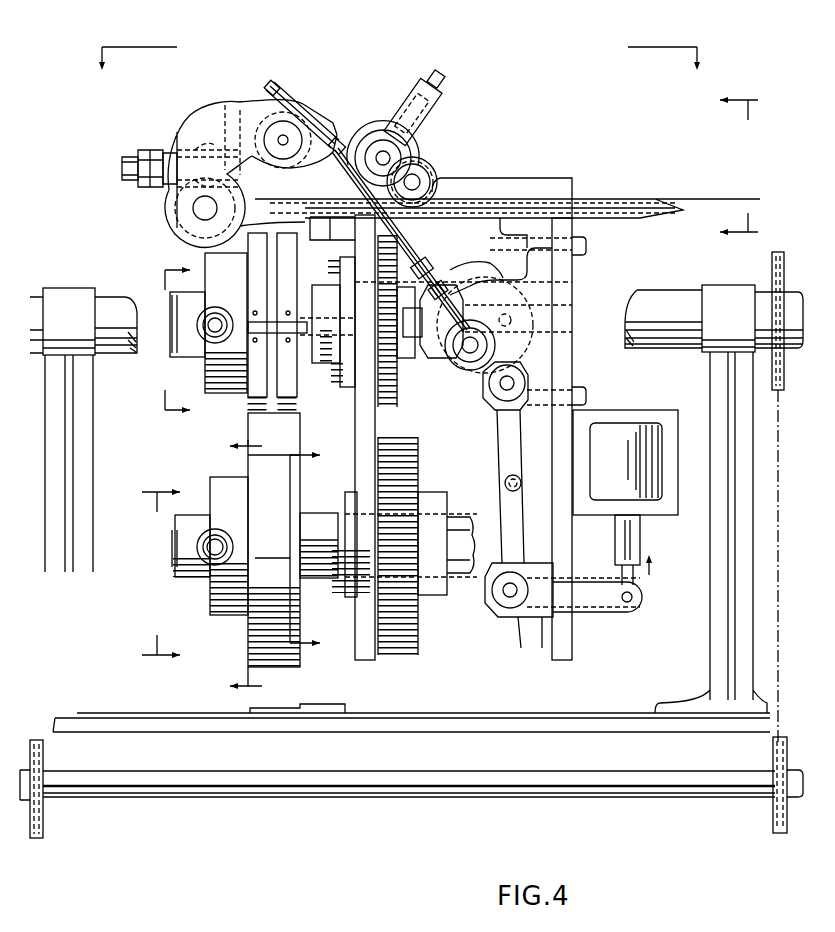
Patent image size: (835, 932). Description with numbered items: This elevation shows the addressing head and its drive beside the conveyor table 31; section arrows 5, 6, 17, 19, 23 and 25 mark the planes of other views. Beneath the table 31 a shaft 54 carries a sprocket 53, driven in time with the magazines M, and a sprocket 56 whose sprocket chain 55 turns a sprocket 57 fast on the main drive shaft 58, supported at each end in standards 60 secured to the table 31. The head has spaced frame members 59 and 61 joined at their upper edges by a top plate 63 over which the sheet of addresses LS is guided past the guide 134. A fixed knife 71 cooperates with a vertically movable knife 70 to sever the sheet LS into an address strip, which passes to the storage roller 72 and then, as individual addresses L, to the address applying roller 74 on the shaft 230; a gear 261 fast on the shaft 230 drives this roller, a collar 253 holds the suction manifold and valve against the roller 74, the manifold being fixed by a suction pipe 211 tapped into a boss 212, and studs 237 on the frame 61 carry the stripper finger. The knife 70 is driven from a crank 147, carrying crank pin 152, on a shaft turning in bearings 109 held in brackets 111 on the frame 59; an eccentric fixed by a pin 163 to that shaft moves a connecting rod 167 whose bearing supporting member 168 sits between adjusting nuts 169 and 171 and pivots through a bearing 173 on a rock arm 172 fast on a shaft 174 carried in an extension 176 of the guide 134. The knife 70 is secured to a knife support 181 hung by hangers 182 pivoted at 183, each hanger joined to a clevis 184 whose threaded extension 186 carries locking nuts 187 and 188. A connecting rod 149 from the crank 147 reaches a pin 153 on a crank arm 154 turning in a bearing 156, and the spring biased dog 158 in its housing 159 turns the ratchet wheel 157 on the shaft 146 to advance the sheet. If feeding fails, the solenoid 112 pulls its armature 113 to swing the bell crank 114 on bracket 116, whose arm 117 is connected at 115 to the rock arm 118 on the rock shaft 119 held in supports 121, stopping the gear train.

The section line 6- 6 is at (399, 45).
The section line 5- 5 is at (746, 166).
The section line 17- 17 is at (163, 340).
The section line 25- 25 is at (147, 573).
The section line 23- 23 is at (255, 566).
The section line 19- 19 is at (312, 549).
The main drive shaft 58 is at (102, 290).
The standards 60 is at (94, 468).
The sprocket 57 is at (778, 255).
The sprocket chain 55 is at (786, 565).
The conveyor table 31 is at (168, 724).
The address L is at (298, 707).
The magazine M is at (322, 712).
The shaft 54 is at (430, 793).
The sprocket 53 is at (45, 813).
The sprocket 56 is at (773, 820).
The frame member 61 is at (367, 658).
The frame member 59 is at (561, 655).
The fixed knife 71 is at (310, 218).
The movable knife 70 is at (300, 192).
The sheet of addresses LS is at (705, 178).
The guide 134 is at (488, 178).
The pin 163 is at (593, 210).
The top plate 63 is at (493, 222).
The brackets 111 is at (522, 284).
The bearings 109 is at (495, 300).
The extension 176 is at (188, 232).
The shaft 174 is at (193, 210).
The locking nut 188 is at (125, 157).
The locking nut 187 is at (148, 150).
The threaded extension 186 is at (172, 150).
The clevis 184 is at (195, 150).
The rock arm 172 is at (222, 150).
The hangers 182 is at (248, 140).
The knife support 181 is at (326, 130).
The pivotal connections 183 is at (270, 90).
The bearing supporting member 168 is at (318, 110).
The adjusting nut 169 is at (275, 125).
The bearing 173 is at (298, 97).
The adjusting nut 171 is at (338, 140).
The bearing 156 is at (368, 135).
The shaft 146 is at (383, 150).
The pin 153 is at (420, 180).
The crank arm 154 is at (422, 148).
The spring biased dog 158 is at (432, 90).
The housing 159 is at (442, 100).
The ratchet wheel 157 is at (397, 135).
The connecting rod 167 is at (448, 200).
The connecting rod 149 is at (428, 295).
The crank pin 152 is at (463, 357).
The crank 147 is at (443, 350).
The rock shaft 119 is at (512, 380).
The supports 121 is at (484, 395).
The arm 117 is at (505, 520).
The rock arm 118 is at (510, 447).
The connection 115 is at (507, 482).
The bracket 116 is at (520, 640).
The bell crank 114 is at (594, 618).
The solenoid 112 is at (650, 410).
The armature 113 is at (667, 562).
The gear 261 is at (408, 460).
The shaft 230 is at (456, 580).
The storage roller 72 is at (290, 266).
The address applying roller 74 is at (292, 512).
The boss 212 is at (200, 540).
The collar 253 is at (186, 555).
The suction pipe 211 is at (207, 566).
The studs 237 is at (318, 580).